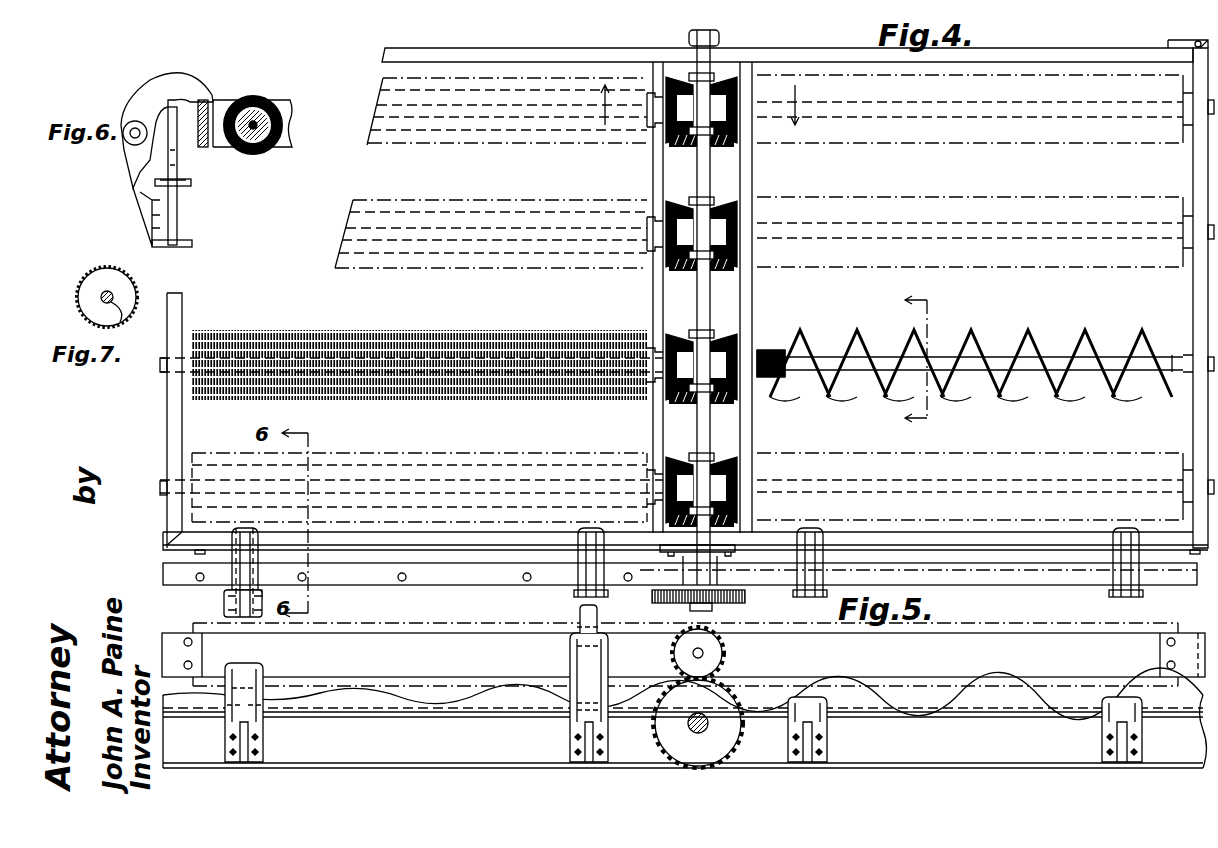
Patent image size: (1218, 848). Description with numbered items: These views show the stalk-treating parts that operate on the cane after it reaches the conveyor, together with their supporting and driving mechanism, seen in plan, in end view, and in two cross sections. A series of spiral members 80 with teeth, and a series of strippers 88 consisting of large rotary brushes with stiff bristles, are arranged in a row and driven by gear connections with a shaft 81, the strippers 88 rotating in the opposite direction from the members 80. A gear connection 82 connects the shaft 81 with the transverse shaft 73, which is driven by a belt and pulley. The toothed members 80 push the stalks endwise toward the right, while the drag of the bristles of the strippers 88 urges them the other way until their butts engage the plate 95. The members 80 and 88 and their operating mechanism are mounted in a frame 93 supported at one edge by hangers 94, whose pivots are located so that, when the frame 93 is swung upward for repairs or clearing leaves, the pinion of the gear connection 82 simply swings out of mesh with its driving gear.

In FIG. 4, the shaft 73 is at (690, 609).
In FIG. 5, the shaft 73 is at (706, 728).
In FIG. 4, the spiral members 80 is at (950, 156).
In FIG. 5, the spiral members 80 is at (685, 681).
In FIG. 7, the spiral members 80 is at (125, 290).
In FIG. 4, the shaft 81 is at (705, 308).
In FIG. 5, the shaft 81 is at (705, 650).
In FIG. 4, the gear connection 82 is at (652, 597).
In FIG. 5, the gear connection 82 is at (712, 700).
In FIG. 4, the strippers 88 is at (548, 160).
In FIG. 5, the strippers 88 is at (685, 628).
In FIG. 6, the strippers 88 is at (270, 102).
In FIG. 4, the frame 93 is at (652, 62).
In FIG. 5, the frame 93 is at (943, 657).
In FIG. 6, the frame 93 is at (204, 148).
In FIG. 4, the hangers 94 is at (246, 618).
In FIG. 5, the hangers 94 is at (243, 690).
In FIG. 6, the hangers 94 is at (150, 94).
In FIG. 4, the plate 95 is at (447, 568).
In FIG. 5, the plate 95 is at (438, 700).
In FIG. 6, the plate 95 is at (168, 140).